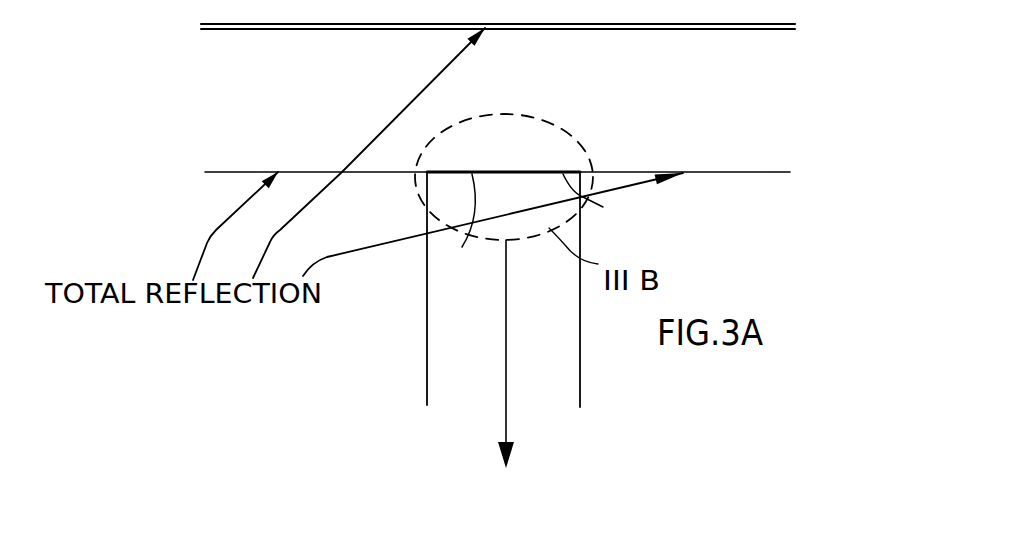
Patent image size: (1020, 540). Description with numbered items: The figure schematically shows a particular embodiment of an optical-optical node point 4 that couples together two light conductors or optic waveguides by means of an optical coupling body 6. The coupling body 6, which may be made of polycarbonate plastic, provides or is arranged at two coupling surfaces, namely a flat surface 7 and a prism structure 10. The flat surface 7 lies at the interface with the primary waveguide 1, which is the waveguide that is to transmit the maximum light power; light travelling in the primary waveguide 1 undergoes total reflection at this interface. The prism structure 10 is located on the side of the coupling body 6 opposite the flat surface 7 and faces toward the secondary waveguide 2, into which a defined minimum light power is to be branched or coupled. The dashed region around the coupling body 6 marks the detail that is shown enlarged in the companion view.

The primary waveguide 1 is at (770, 108).
The secondary waveguide 2 is at (567, 313).
The optical-optical node point 4 is at (385, 273).
The optical coupling body 6 is at (598, 210).
The flat surface 7 is at (568, 138).
The prism structure 10 is at (458, 228).